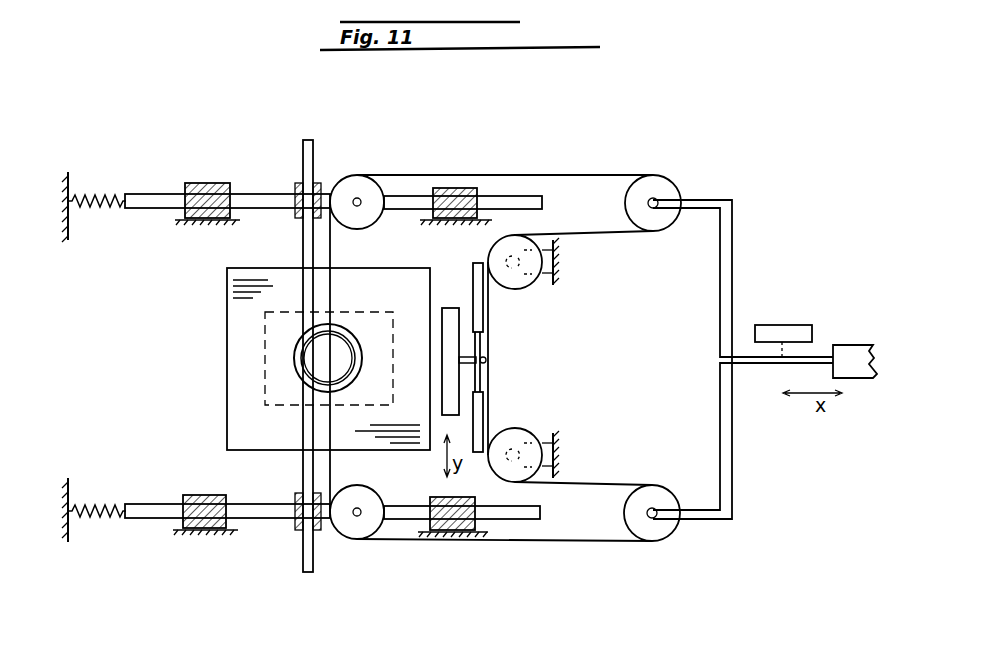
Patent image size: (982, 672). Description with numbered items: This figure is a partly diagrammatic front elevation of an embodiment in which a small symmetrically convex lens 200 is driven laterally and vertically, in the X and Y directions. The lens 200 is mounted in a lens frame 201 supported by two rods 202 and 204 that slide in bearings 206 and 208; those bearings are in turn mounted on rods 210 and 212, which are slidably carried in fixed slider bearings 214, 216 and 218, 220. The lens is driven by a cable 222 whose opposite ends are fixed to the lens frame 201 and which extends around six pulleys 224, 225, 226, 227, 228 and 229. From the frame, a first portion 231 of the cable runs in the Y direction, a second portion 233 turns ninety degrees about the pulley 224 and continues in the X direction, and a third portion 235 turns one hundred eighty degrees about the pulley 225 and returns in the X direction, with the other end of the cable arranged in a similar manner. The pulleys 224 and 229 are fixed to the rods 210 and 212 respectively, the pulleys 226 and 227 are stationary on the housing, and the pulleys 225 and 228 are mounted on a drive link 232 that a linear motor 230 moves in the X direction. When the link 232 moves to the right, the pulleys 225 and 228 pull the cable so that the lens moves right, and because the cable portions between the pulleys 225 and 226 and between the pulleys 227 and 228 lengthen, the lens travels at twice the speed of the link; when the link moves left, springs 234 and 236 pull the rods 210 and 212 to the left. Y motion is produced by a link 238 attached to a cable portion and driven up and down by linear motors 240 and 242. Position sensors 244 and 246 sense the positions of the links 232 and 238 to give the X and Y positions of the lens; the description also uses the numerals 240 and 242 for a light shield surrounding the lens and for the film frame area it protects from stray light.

The lens 200 is at (302, 378).
The lens frame 201 is at (302, 360).
The rod 202 is at (305, 246).
The rod 204 is at (305, 472).
The bearing 206 is at (296, 184).
The bearing 208 is at (295, 531).
The rod 210 is at (151, 194).
The rod 212 is at (153, 510).
The fixed slider bearing 214 is at (212, 183).
The fixed slider bearing 216 is at (480, 188).
The fixed slider bearing 218 is at (205, 530).
The fixed slider bearing 220 is at (445, 535).
The cable 222 is at (436, 171).
The pulley 224 is at (362, 185).
The pulley 225 is at (660, 180).
The pulley 226 is at (544, 286).
The pulley 227 is at (545, 445).
The pulley 228 is at (647, 530).
The pulley 229 is at (355, 530).
The linear motor 230 is at (852, 345).
The first portion of the cable 231 is at (332, 246).
The drive link 232 is at (732, 265).
The second portion of the cable 233 is at (616, 175).
The spring 234 is at (100, 195).
The third portion of the cable 235 is at (630, 233).
The spring 236 is at (100, 518).
The link 238 is at (483, 348).
The linear motor 240 is at (227, 314).
The linear motor 242 is at (265, 346).
The position sensor 244 is at (796, 316).
The position sensor 246 is at (459, 382).